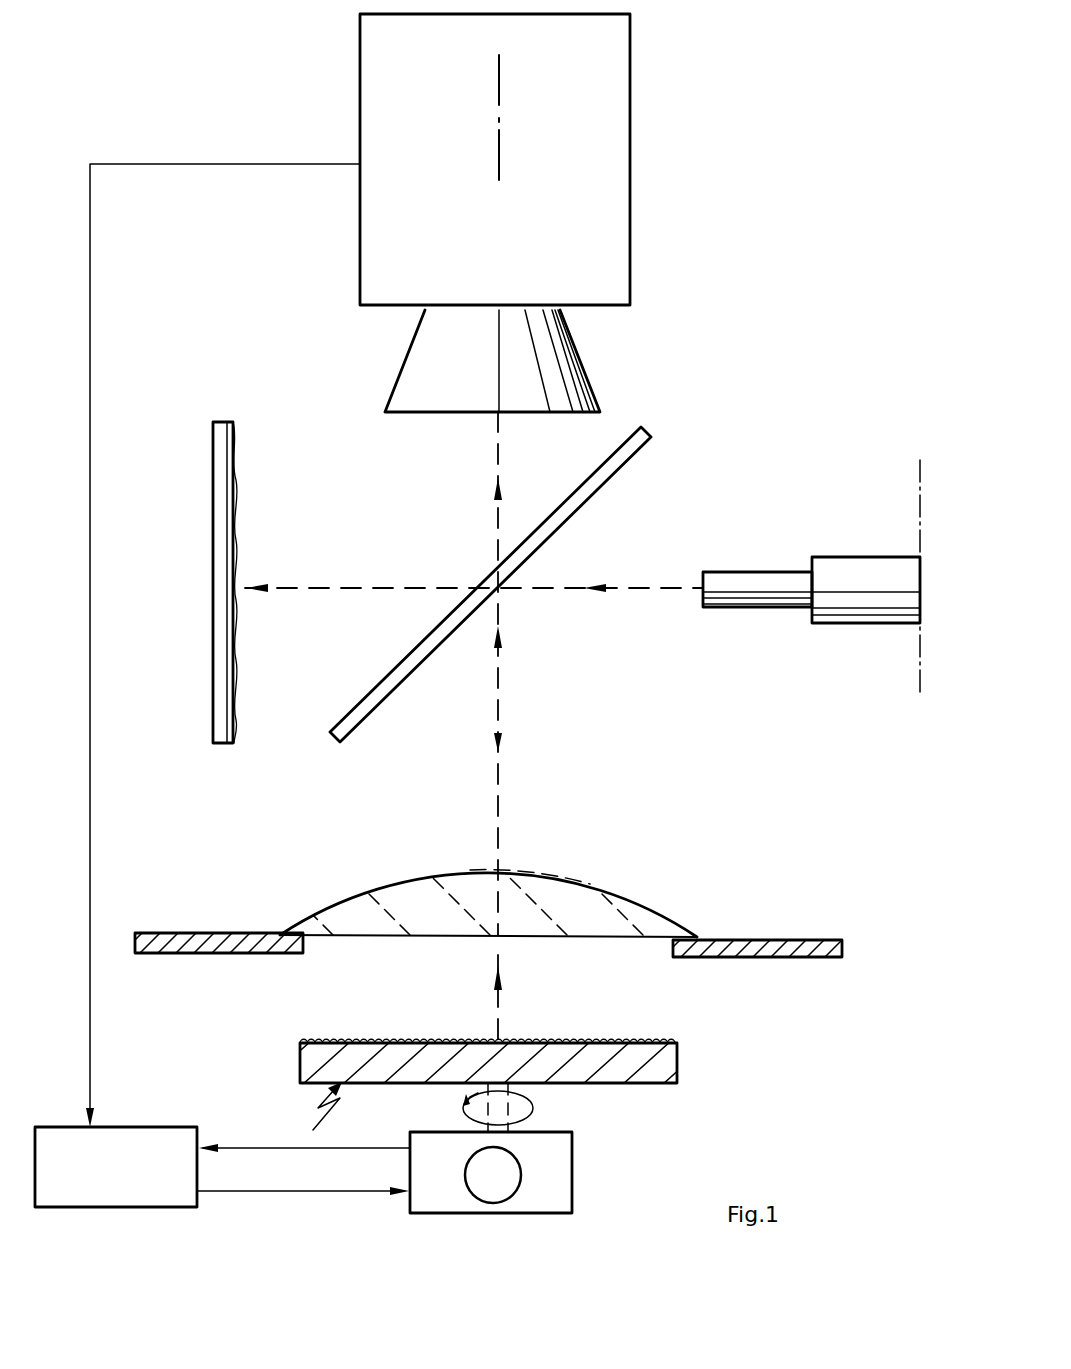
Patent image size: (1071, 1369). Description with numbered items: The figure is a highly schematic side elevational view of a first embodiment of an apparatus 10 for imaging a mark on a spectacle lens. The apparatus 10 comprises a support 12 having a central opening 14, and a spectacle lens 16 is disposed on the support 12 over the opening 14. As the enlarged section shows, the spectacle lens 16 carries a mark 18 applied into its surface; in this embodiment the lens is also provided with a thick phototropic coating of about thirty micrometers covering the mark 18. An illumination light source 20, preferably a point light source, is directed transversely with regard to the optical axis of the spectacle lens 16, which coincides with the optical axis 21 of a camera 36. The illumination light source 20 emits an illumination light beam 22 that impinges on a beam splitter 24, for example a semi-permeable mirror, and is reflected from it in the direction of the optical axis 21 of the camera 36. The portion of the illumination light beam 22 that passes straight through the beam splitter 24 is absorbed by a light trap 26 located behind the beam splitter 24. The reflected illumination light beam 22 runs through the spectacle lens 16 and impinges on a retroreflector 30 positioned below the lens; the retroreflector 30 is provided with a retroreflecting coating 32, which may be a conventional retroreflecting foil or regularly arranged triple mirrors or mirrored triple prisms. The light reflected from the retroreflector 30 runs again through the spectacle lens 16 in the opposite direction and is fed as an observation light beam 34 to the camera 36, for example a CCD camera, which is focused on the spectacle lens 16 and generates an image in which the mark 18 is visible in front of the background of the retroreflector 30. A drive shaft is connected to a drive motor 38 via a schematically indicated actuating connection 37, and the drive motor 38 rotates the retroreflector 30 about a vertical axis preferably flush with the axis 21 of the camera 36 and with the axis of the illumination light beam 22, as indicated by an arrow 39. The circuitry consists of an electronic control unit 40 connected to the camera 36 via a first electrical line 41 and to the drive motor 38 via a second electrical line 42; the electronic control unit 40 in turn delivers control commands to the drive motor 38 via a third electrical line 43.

The apparatus 10 is at (742, 140).
The support 12 is at (807, 940).
The central opening 14 is at (664, 940).
The spectacle lens 16 is at (597, 910).
The mark 18 is at (550, 878).
The illumination light source 20 is at (846, 570).
The optical axis 21 is at (499, 150).
The illumination light beam 22 is at (643, 588).
The beam splitter 24 is at (357, 722).
The light trap 26 is at (216, 575).
The retroreflector 30 is at (328, 1117).
The retroreflecting coating 32 is at (612, 1040).
The observation light beam 34 is at (498, 503).
The camera 36 is at (652, 224).
The actuating connection 37 is at (463, 1107).
The drive motor 38 is at (562, 1177).
The arrow 39 is at (531, 1107).
The electronic control unit 40 is at (108, 1192).
The first electrical line 41 is at (90, 392).
The second electrical line 42 is at (212, 1140).
The third electrical line 43 is at (313, 1192).